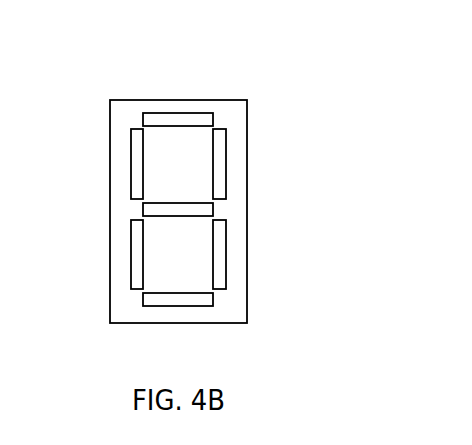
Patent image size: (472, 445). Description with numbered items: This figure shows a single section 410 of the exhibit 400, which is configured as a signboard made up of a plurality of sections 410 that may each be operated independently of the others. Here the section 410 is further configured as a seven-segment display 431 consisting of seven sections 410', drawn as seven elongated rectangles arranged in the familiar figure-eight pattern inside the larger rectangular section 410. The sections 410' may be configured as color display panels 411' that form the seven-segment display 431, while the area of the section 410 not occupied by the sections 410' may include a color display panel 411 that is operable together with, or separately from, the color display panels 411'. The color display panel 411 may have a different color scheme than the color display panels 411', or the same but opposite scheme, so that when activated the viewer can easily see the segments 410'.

The exhibit 400 is at (298, 146).
The section 410 is at (218, 177).
The section 410' is at (201, 172).
The color display panel 411 is at (274, 164).
The color display panel 411' is at (276, 254).
The 7-segment display 431 is at (247, 208).